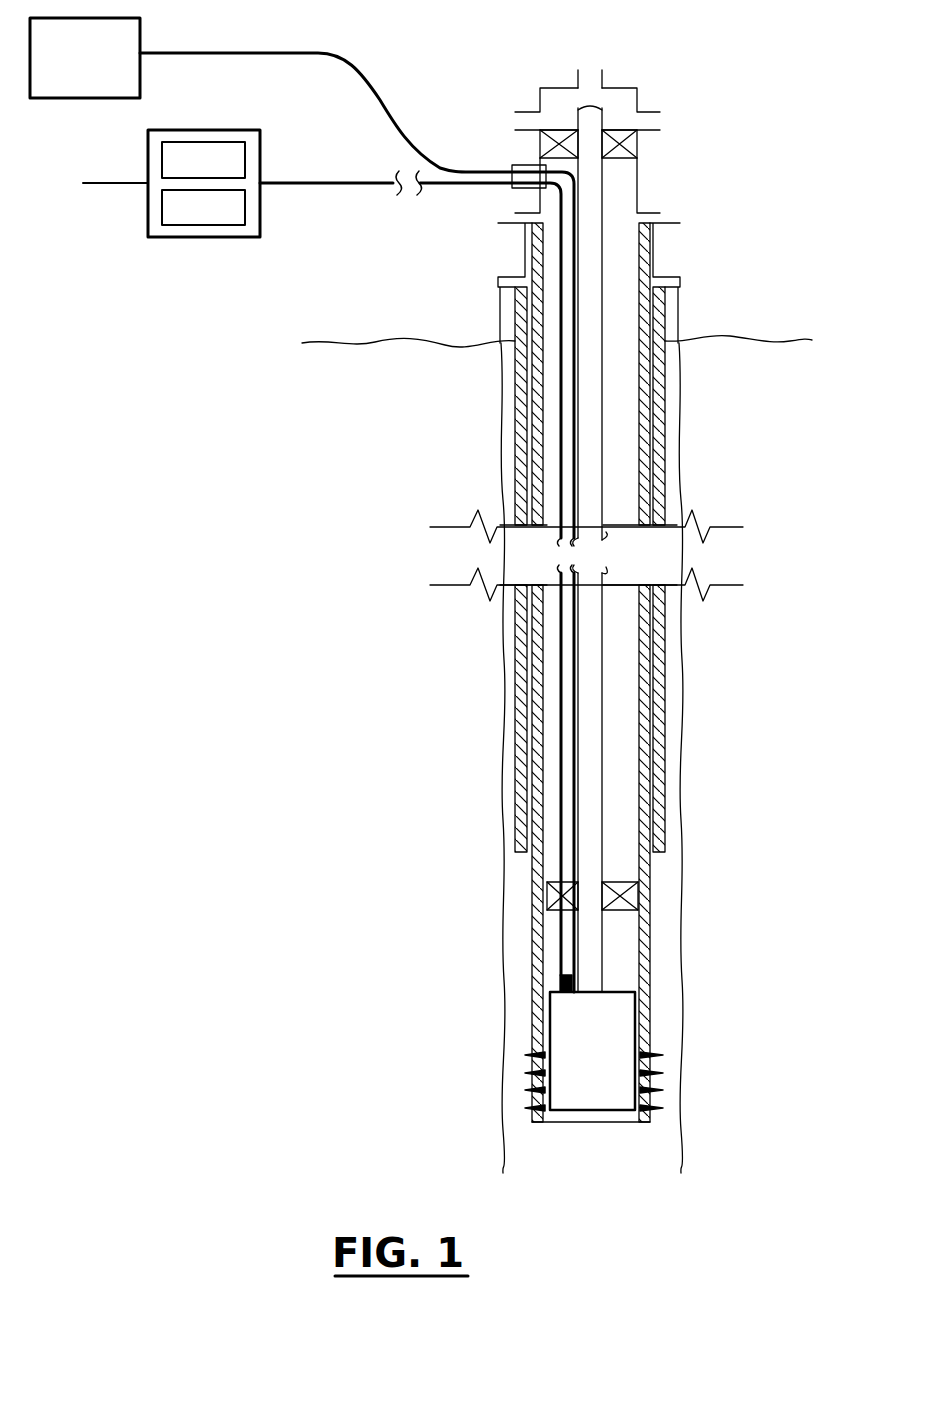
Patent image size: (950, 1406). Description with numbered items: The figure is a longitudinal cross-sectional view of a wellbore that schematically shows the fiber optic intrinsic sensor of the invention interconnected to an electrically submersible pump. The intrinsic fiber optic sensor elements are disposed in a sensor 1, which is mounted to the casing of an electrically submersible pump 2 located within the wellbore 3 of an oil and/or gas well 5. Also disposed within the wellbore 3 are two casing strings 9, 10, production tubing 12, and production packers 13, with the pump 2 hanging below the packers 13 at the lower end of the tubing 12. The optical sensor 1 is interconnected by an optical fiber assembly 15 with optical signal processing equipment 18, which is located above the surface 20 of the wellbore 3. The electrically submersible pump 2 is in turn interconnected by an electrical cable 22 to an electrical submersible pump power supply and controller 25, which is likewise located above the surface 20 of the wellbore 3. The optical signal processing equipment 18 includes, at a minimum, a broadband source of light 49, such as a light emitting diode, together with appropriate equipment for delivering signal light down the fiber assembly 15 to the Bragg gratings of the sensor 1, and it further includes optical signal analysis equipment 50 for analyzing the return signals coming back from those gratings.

The sensor 1 is at (560, 985).
The electrically submersible pump 2 is at (594, 1051).
The wellbore 3 is at (673, 707).
The oil and/or gas well 5 is at (413, 616).
The casing string 9 is at (522, 435).
The casing string 10 is at (533, 398).
The production tubing 12 is at (597, 473).
The production packers 13 is at (550, 895).
The optical fiber assembly 15 is at (562, 778).
The optical signal processing equipment 18 is at (320, 338).
The surface 20 is at (448, 342).
The electrical cable 22 is at (565, 722).
The electrical submersible pump power supply and controller 25 is at (140, 38).
The broadband source of light 49 is at (247, 158).
The optical signal analysis equipment 50 is at (186, 225).